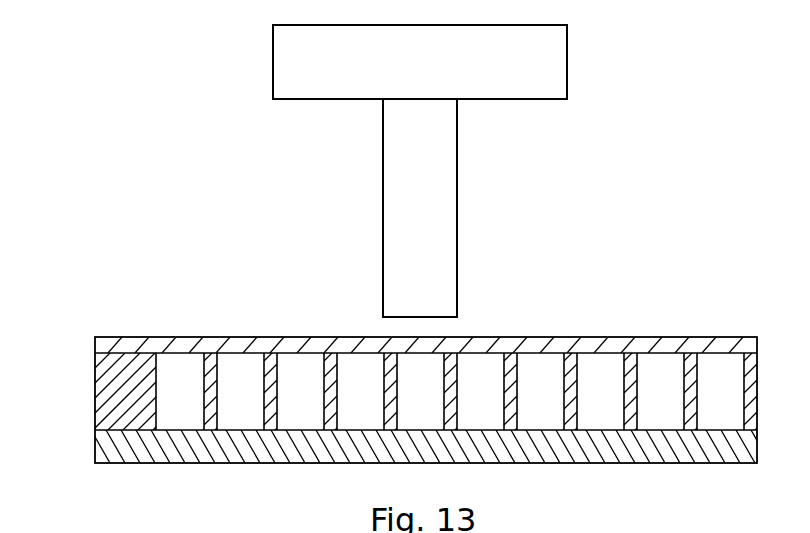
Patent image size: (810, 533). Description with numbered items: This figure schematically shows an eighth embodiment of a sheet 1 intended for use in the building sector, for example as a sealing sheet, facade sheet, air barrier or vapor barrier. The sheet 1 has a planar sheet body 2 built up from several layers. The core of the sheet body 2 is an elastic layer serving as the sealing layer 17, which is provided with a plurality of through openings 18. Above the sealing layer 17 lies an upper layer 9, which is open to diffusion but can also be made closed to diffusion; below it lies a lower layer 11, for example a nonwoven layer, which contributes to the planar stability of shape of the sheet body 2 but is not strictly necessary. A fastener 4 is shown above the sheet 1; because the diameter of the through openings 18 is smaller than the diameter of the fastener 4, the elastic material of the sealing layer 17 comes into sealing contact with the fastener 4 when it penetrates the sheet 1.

The sheet 1 is at (605, 273).
The sheet body 2 is at (627, 324).
The fastener 4 is at (435, 179).
The upper layer 9 is at (690, 343).
The lower layer 11 is at (685, 447).
The sealing layer 17 is at (108, 392).
The through openings 18 is at (175, 373).